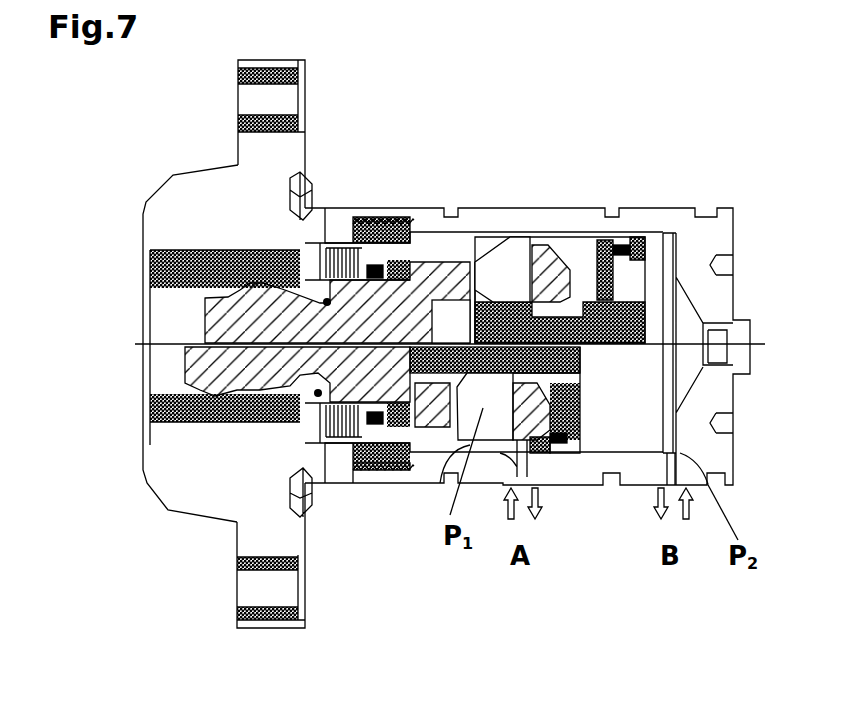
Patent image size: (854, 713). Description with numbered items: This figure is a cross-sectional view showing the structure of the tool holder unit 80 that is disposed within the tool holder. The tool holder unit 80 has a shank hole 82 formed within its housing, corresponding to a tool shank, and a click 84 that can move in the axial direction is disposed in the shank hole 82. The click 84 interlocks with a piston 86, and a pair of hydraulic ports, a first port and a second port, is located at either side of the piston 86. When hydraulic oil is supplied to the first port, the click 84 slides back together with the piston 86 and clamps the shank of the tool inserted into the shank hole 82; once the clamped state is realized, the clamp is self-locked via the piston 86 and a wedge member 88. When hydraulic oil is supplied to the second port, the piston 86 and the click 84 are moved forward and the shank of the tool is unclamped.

The tool holder unit 80 is at (262, 162).
The shank hole 82 is at (178, 422).
The click 84 is at (372, 270).
The piston 86 is at (620, 277).
The wedge member 88 is at (515, 260).